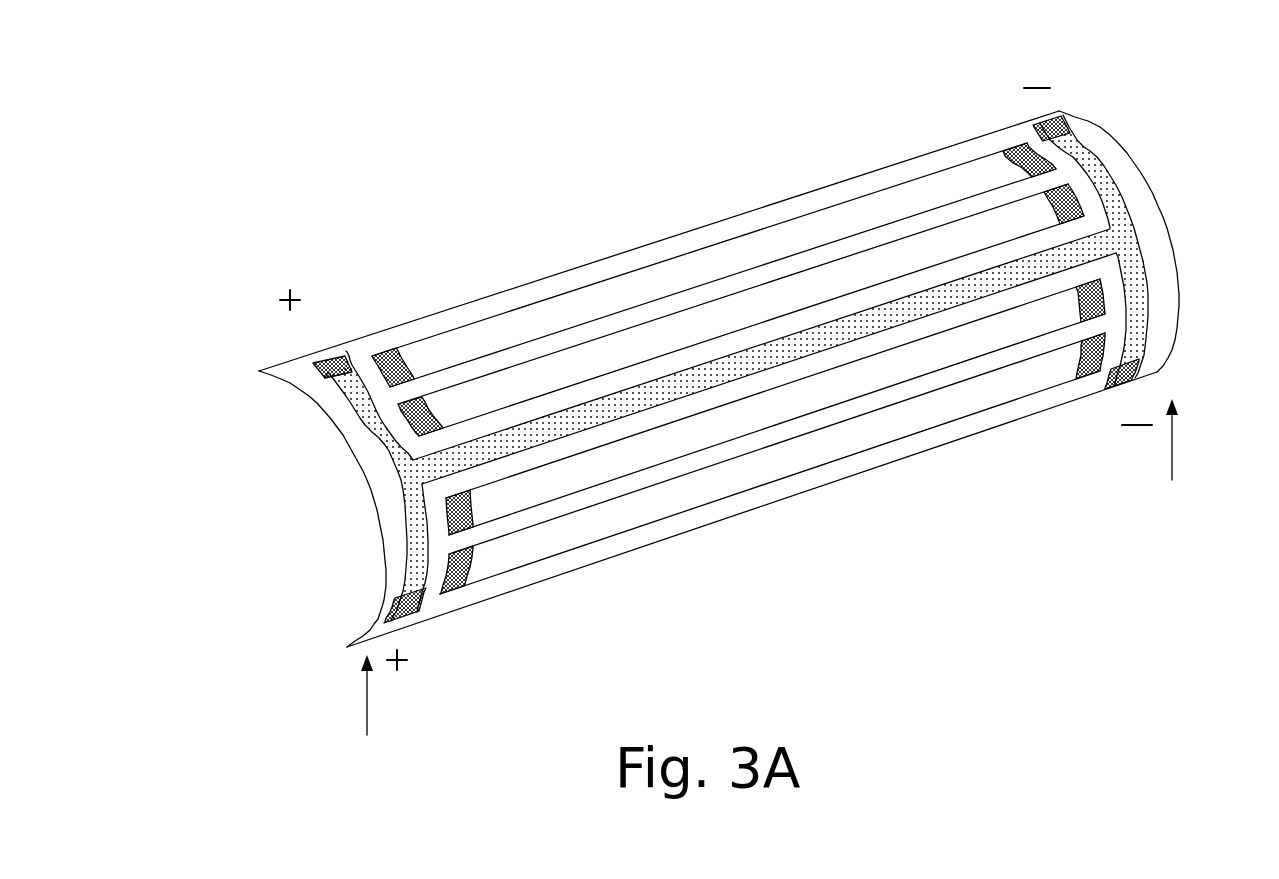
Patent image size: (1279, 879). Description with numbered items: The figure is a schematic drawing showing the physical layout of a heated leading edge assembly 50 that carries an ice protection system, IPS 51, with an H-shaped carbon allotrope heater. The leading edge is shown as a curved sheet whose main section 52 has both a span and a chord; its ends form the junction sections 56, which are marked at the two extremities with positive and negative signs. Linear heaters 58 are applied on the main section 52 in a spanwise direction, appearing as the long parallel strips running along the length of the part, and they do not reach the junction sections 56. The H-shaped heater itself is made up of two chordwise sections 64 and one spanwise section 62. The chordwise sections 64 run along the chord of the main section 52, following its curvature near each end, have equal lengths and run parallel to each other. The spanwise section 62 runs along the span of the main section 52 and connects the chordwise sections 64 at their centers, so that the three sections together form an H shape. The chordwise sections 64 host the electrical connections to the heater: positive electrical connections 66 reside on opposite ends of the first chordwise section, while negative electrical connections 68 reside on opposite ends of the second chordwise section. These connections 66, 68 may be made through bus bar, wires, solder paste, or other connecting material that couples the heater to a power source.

The heated leading edge assembly 50 is at (717, 403).
The IPS 51 is at (534, 284).
The main section 52 is at (627, 252).
The junction sections 56 is at (735, 426).
The linear heaters 58 is at (907, 212).
The spanwise section 62 is at (414, 470).
The chordwise sections 64 is at (366, 400).
The positive electrical connections 66 is at (320, 362).
The negative electrical connections 68 is at (1055, 128).